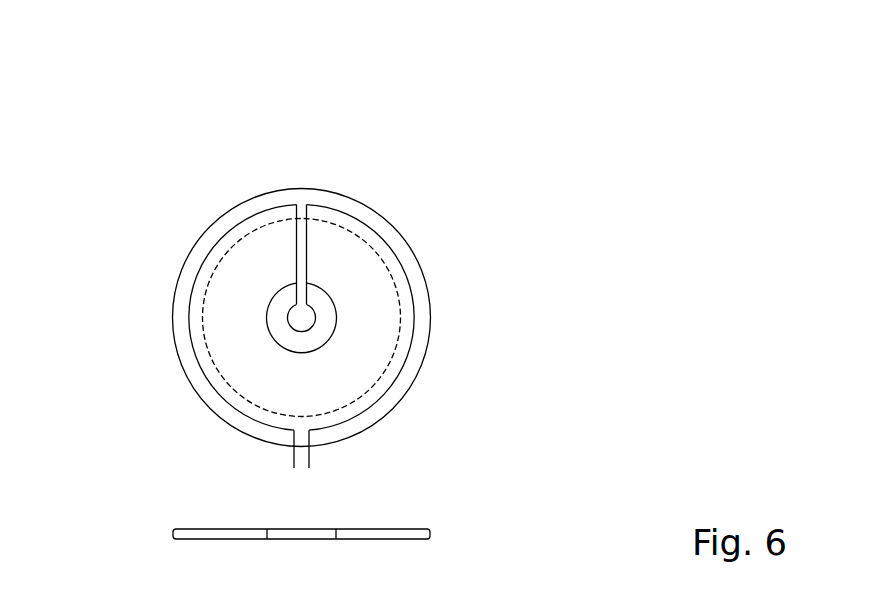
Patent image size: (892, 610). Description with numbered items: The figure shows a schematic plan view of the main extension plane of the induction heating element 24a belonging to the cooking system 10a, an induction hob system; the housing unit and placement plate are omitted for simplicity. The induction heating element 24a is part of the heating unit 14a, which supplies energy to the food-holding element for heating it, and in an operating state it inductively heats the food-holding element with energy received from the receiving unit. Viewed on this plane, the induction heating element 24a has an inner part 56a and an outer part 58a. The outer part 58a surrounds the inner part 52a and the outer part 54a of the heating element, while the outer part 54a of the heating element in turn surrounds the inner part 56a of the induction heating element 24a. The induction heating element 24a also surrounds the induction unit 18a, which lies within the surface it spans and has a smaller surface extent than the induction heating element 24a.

The cooking system 10a is at (437, 117).
The heating unit 14a is at (453, 307).
The induction unit 18a is at (218, 385).
The induction heating element 24a is at (420, 377).
The inner part of the heating element 52a is at (283, 307).
The outer part of the heating element 54a is at (261, 207).
The inner part of the induction heating element 56a is at (344, 308).
The outer part of the induction heating element 58a is at (362, 202).